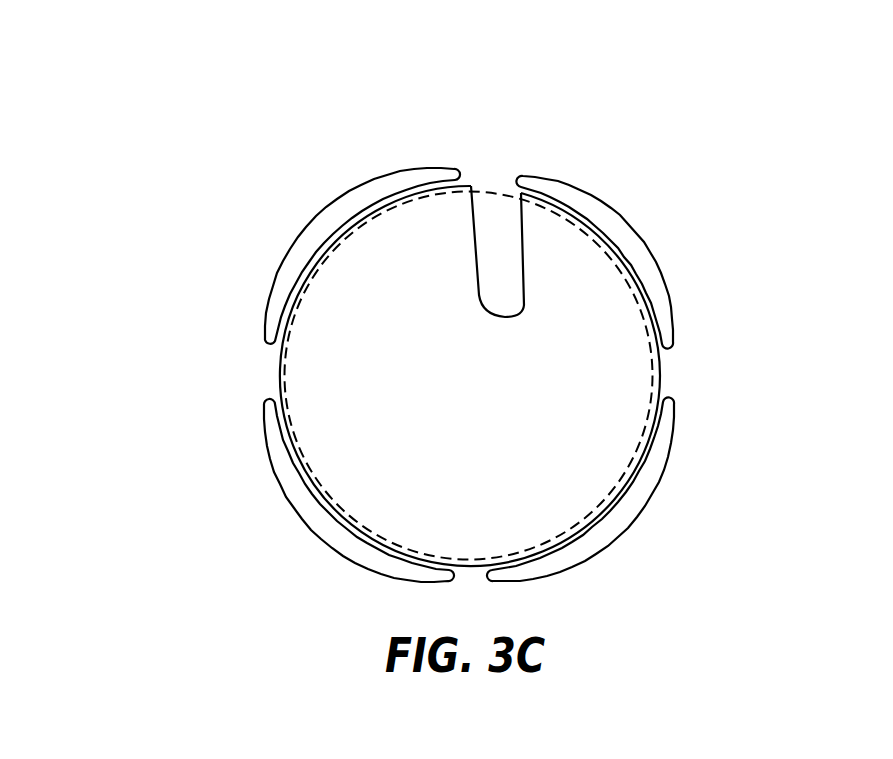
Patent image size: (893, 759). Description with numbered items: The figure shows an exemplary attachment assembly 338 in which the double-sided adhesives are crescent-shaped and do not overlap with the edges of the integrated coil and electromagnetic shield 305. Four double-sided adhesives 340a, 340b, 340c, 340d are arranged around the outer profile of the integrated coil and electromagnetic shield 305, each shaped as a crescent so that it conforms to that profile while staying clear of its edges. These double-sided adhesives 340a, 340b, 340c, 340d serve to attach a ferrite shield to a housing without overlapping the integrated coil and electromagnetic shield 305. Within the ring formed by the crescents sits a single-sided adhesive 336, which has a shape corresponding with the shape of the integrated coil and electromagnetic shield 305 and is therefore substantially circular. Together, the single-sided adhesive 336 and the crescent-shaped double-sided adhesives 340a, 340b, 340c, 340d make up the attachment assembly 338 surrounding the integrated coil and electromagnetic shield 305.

The attachment assembly 338 is at (167, 125).
The single-sided adhesive 336 is at (373, 207).
The integrated coil and electromagnetic shield 305 is at (493, 190).
The double-sided adhesive 340a is at (663, 270).
The double-sided adhesive 340b is at (277, 268).
The double-sided adhesive 340c is at (290, 510).
The double-sided adhesive 340d is at (645, 512).